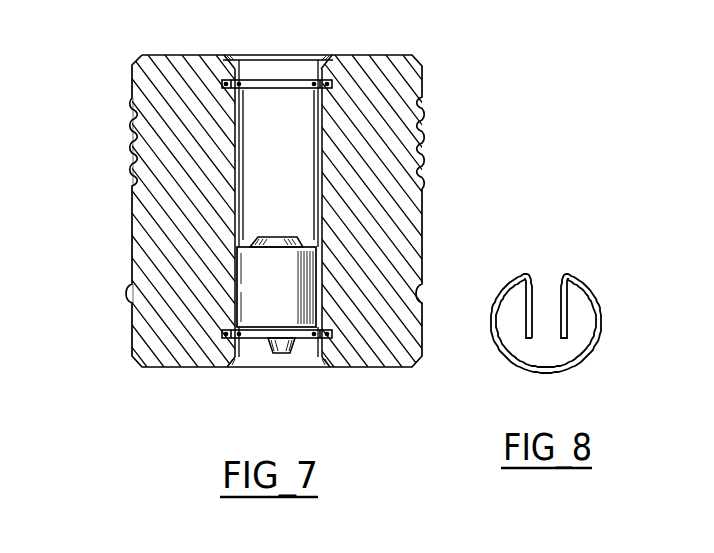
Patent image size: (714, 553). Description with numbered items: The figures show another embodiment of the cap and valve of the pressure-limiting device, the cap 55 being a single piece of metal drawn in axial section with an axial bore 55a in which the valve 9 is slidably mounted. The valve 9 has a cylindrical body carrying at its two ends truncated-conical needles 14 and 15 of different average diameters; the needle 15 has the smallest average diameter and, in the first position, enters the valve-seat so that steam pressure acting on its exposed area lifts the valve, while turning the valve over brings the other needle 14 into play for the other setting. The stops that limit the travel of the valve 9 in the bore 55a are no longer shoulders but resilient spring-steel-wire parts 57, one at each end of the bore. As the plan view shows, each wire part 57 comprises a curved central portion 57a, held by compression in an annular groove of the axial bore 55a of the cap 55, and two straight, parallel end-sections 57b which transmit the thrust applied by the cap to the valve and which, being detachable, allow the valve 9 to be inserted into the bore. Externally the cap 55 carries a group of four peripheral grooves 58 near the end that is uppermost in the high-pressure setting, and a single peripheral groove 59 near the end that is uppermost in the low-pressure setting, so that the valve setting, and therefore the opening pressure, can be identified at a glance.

In FIG. 7, the cap 55 is at (131, 228).
In FIG. 7, the axial bore 55a is at (318, 155).
In FIG. 7, the peripheral grooves 58 is at (131, 128).
In FIG. 7, the peripheral groove 59 is at (130, 295).
In FIG. 7, the resilient spring-steel-wire part 57 is at (246, 78).
In FIG. 8, the resilient spring-steel-wire part 57 is at (551, 310).
In FIG. 8, the curved central portion 57a is at (591, 349).
In FIG. 8, the straight parallel end-sections 57b is at (531, 274).
In FIG. 7, the valve 9 is at (276, 287).
In FIG. 7, the truncated-conical needle 14 is at (278, 234).
In FIG. 7, the truncated-conical needle 15 is at (273, 350).